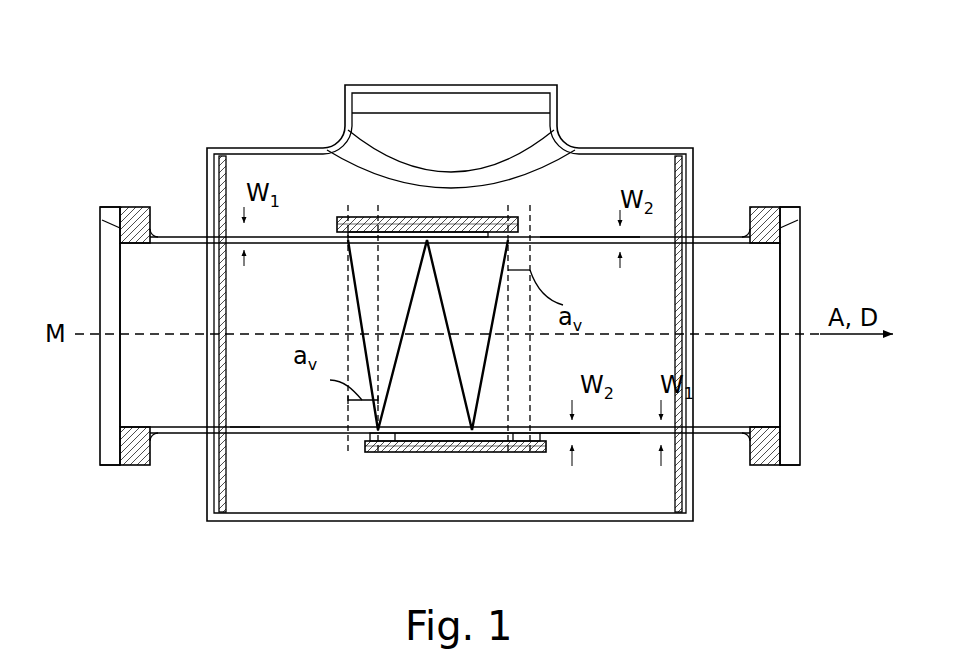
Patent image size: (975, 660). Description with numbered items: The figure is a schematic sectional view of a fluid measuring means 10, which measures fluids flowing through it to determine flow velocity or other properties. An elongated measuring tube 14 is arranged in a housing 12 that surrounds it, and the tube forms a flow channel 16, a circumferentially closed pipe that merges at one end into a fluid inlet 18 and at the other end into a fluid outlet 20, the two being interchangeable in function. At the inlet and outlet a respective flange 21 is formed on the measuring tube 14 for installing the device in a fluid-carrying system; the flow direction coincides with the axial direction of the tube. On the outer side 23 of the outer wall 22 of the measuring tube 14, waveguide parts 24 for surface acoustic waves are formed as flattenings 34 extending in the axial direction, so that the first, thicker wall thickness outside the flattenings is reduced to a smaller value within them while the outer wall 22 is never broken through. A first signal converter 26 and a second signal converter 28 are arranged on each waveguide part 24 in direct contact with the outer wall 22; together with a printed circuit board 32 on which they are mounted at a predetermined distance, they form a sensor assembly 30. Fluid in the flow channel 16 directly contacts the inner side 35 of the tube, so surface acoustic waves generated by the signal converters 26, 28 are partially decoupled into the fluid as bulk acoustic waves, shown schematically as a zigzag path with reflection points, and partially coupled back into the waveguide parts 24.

The fluid measuring means 10 is at (113, 71).
The housing 12 is at (648, 150).
The measuring tube 14 is at (185, 206).
The flow channel 16 is at (133, 373).
The fluid inlet 18 is at (90, 262).
The fluid outlet 20 is at (812, 256).
The flange 21 is at (125, 213).
The outer wall 22 is at (243, 433).
The outer side 23 is at (222, 513).
The waveguide part 24 is at (303, 226).
The first signal converter 26 is at (357, 237).
The second signal converter 28 is at (473, 217).
The sensor assembly 30 is at (408, 208).
The printed circuit board 32 is at (493, 237).
The flattening 34 is at (570, 235).
The inner side 35 is at (240, 427).